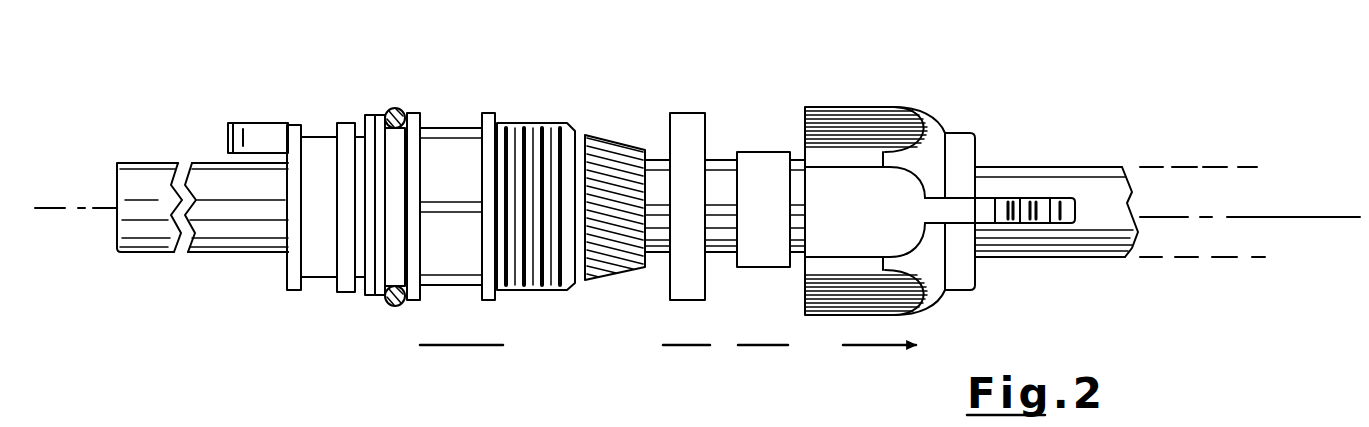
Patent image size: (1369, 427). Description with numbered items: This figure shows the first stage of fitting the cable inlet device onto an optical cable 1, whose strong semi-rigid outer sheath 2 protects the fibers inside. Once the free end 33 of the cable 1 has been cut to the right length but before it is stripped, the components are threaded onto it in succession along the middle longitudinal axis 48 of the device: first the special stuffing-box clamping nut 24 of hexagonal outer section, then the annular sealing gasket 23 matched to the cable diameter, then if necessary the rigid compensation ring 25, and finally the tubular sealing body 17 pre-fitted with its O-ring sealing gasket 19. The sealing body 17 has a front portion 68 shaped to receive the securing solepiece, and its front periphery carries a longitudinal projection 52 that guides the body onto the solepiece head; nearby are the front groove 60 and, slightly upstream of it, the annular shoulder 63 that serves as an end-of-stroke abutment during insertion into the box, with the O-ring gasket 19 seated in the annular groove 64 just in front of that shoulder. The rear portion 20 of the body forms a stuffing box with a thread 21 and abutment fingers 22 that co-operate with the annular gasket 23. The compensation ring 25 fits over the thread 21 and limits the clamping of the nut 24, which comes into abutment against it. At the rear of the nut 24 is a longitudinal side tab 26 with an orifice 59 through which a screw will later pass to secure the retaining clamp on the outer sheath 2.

The cable 1 is at (1120, 140).
The outer sheath 2 is at (1117, 182).
The sealing body 17 is at (477, 111).
The O-ring sealing gasket 19 is at (388, 109).
The rear portion 20 is at (589, 101).
The thread 21 is at (543, 279).
The abutment fingers 22 is at (621, 212).
The annular sealing gasket 23 is at (762, 165).
The clamping nut 24 is at (933, 140).
The compensation ring 25 is at (687, 126).
The longitudinal side tab 26 is at (1066, 220).
The free end 33 is at (108, 182).
The middle longitudinal axis 48 is at (1283, 218).
The longitudinal projection 52 is at (228, 132).
The orifice 59 is at (1031, 196).
The front groove 60 is at (321, 284).
The annular shoulder 63 is at (367, 115).
The annular groove 64 is at (396, 243).
The front portion 68 is at (276, 274).